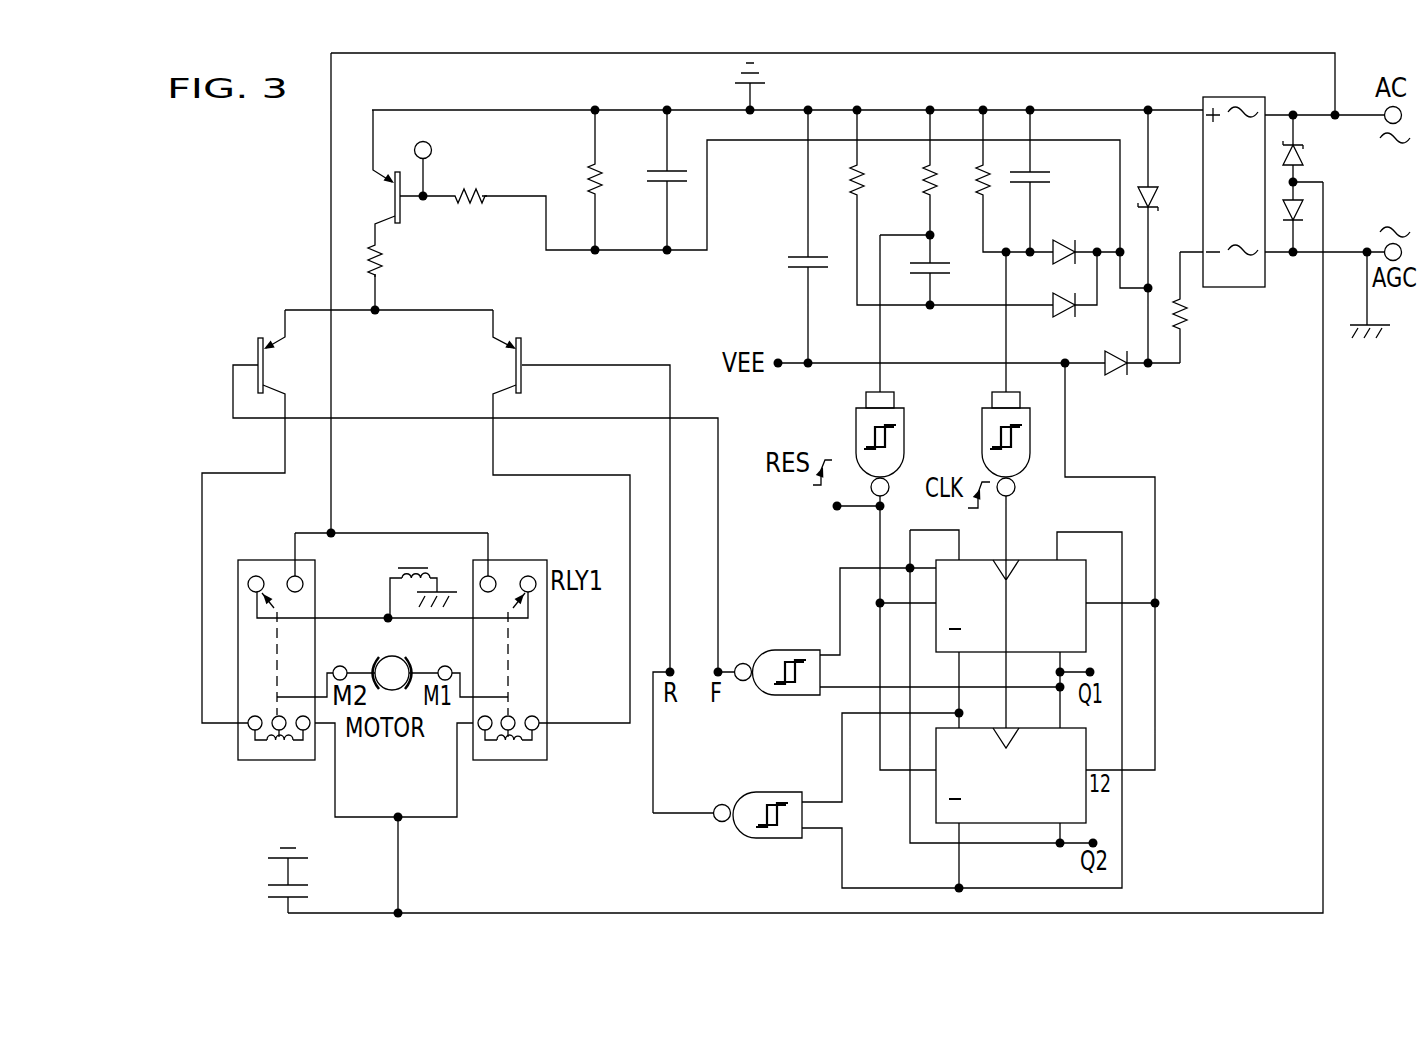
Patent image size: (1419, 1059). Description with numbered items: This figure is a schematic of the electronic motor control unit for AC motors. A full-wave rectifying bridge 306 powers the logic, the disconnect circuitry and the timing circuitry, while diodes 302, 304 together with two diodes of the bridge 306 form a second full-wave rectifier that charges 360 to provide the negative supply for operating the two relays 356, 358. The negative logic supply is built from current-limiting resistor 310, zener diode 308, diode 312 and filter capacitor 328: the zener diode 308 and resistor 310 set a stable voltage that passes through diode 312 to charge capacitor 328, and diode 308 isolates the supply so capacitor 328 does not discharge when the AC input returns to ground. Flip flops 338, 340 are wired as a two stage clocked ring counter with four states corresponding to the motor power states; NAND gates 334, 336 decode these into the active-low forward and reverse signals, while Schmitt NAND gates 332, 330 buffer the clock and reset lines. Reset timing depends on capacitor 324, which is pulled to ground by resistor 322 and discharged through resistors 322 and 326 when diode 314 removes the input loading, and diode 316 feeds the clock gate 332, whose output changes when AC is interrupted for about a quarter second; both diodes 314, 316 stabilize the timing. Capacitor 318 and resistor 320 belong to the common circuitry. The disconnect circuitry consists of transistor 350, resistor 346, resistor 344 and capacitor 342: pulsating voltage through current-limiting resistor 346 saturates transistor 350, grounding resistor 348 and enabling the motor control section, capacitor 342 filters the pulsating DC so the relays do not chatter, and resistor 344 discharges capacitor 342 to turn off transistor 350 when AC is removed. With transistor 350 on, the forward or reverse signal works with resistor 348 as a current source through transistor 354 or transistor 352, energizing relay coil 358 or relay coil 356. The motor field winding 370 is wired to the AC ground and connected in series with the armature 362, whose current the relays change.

The diode 302 is at (1300, 153).
The diode 304 is at (1305, 212).
The rectifying bridge 306 is at (1230, 97).
The zener diode 308 is at (1160, 200).
The resistor 310 is at (1183, 310).
The diode 312 is at (1115, 374).
The diode 314 is at (1062, 318).
The diode 316 is at (1056, 238).
The capacitor 318 is at (1044, 178).
The resistor 320 is at (984, 183).
The resistor 322 is at (928, 183).
The capacitor 324 is at (947, 268).
The resistor 326 is at (857, 175).
The capacitor 328 is at (788, 262).
The NAND gate 330 is at (857, 430).
The NAND gate 332 is at (983, 440).
The NAND gate 334 is at (790, 648).
The NAND gate 336 is at (780, 790).
The flip flop 338 is at (1043, 557).
The flip flop 340 is at (1000, 826).
The capacitor 342 is at (647, 178).
The resistor 344 is at (588, 178).
The current limiting resistor 346 is at (456, 207).
The resistor 348 is at (376, 268).
The disconnect transistor 350 is at (394, 208).
The transistor 352 is at (516, 372).
The transistor 354 is at (265, 372).
The relay 356 is at (497, 763).
The relay 358 is at (287, 762).
The capacitor 360 is at (268, 890).
The armature 362 is at (393, 656).
The motor field winding 370 is at (417, 568).